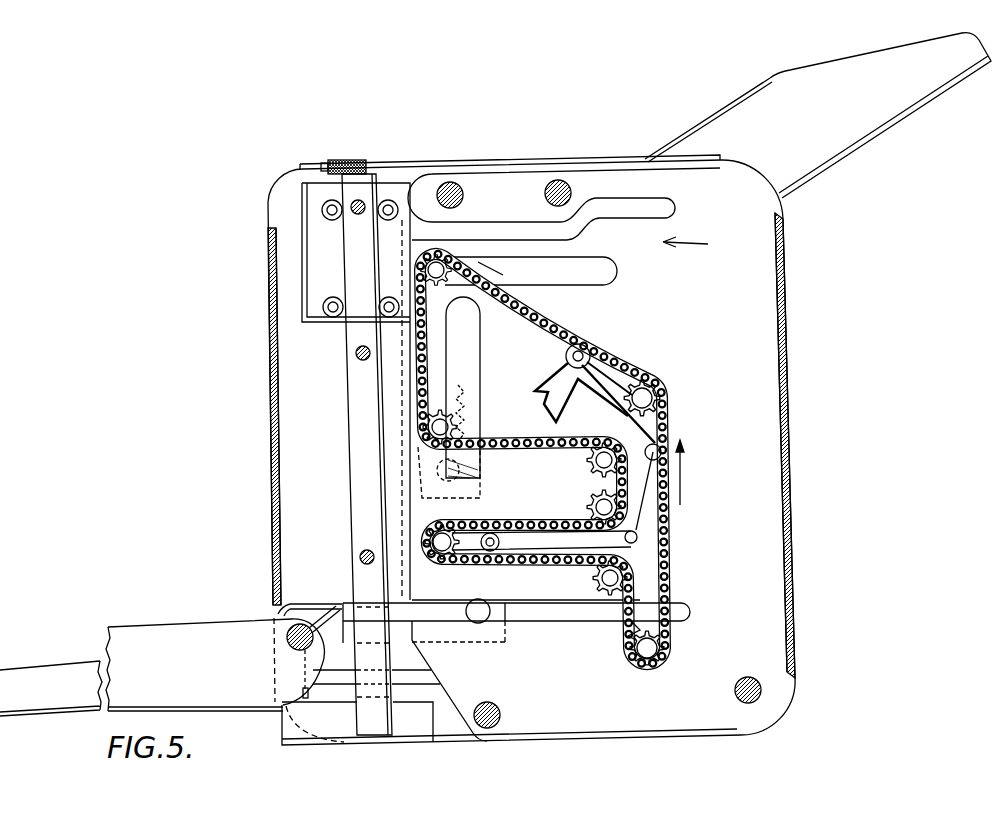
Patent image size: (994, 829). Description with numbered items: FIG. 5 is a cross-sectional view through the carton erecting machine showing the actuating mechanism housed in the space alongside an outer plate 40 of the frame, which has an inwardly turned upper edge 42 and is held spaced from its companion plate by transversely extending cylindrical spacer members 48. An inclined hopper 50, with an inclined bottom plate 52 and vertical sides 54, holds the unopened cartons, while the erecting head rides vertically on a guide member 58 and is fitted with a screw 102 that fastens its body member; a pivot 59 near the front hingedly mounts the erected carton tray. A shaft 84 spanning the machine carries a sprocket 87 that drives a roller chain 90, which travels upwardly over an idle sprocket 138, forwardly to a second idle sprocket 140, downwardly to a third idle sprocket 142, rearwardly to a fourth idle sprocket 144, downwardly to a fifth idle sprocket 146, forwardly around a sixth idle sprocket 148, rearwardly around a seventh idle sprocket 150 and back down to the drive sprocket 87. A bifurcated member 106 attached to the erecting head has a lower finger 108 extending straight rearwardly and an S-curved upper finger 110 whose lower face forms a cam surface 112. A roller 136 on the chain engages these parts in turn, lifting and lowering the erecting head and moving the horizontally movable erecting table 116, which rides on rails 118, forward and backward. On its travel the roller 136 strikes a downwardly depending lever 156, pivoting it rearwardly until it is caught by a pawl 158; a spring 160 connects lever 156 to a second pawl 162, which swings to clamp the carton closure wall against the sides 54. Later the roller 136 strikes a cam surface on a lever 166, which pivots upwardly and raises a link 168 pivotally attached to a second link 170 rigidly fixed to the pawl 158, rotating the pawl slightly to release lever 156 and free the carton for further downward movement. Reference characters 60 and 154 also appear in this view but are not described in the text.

The outer plate 40 is at (283, 198).
The inwardly turned upper edge 42 is at (410, 167).
The cylindrical spacer member 48 is at (462, 191).
The inclined hopper 50 is at (746, 106).
The inclined bottom plate 52 is at (838, 158).
The vertical side 54 is at (818, 124).
The guide member 58 is at (356, 474).
The pivot 59 is at (288, 641).
The lever 60 is at (178, 680).
The shaft 84 is at (655, 650).
The sprocket 87 is at (660, 629).
The roller chain 90 is at (666, 514).
The screw 102 is at (346, 160).
The bifurcated member 106 is at (704, 244).
The lower finger 108 is at (615, 272).
The upper finger 110 is at (503, 224).
The cam surface 112 is at (584, 224).
The erecting table 116 is at (296, 601).
The rail 118 is at (425, 682).
The roller 136 is at (441, 256).
The idle sprocket 138 is at (622, 410).
The second idle sprocket 140 is at (505, 272).
The third idle sprocket 142 is at (425, 428).
The fourth idle sprocket 144 is at (590, 462).
The fifth idle sprocket 146 is at (588, 507).
The sixth idle sprocket 148 is at (448, 556).
The seventh idle sprocket 150 is at (596, 578).
The slide rod 154 is at (356, 590).
The lever 156 is at (468, 347).
The pawl 158 is at (541, 411).
The spring 160 is at (467, 410).
The second pawl 162 is at (449, 482).
The lever 166 is at (548, 547).
The link 168 is at (660, 540).
The second link 170 is at (624, 428).